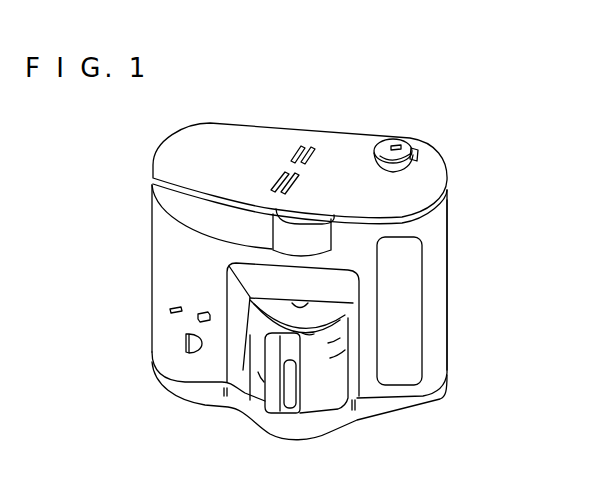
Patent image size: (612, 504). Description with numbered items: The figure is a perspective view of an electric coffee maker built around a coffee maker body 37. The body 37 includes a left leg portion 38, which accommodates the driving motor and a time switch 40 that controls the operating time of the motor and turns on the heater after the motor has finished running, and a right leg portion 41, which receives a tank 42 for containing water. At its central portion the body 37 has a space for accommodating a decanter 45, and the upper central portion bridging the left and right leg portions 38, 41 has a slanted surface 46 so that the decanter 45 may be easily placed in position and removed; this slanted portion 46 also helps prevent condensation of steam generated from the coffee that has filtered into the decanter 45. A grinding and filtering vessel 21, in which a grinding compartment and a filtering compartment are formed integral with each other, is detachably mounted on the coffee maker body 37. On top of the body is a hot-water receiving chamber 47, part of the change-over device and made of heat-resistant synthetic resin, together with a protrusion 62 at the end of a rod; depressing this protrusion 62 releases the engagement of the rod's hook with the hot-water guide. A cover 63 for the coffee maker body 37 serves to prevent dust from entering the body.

The grinding and filtering vessel 21 is at (195, 225).
The coffee maker body 37 is at (160, 343).
The left leg portion 38 is at (167, 287).
The time switch 40 is at (183, 350).
The right leg portion 41 is at (435, 287).
The tank 42 is at (410, 332).
The decanter 45 is at (320, 377).
The slanted surface 46 is at (293, 283).
The hot-water receiving chamber 47 is at (398, 140).
The protrusion 62 is at (419, 153).
The cover 63 is at (273, 143).